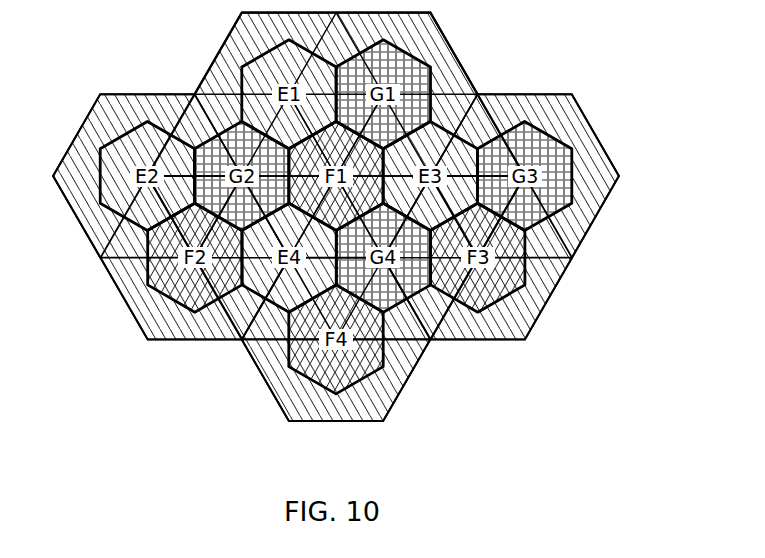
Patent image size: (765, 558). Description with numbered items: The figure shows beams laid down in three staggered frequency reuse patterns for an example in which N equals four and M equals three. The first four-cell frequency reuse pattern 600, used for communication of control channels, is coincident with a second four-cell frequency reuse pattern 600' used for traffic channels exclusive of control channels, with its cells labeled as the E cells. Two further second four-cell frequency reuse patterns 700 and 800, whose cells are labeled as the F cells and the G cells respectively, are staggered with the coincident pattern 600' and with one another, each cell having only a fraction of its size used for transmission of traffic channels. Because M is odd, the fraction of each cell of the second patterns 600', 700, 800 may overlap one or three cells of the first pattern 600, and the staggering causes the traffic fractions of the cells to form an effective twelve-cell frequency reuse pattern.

The first 4-cell frequency reuse pattern 600 is at (147, 140).
The second 4-cell frequency reuse pattern 600' is at (195, 257).
The second 4-cell frequency reuse pattern 700 is at (450, 378).
The second 4-cell frequency reuse pattern 800 is at (499, 58).